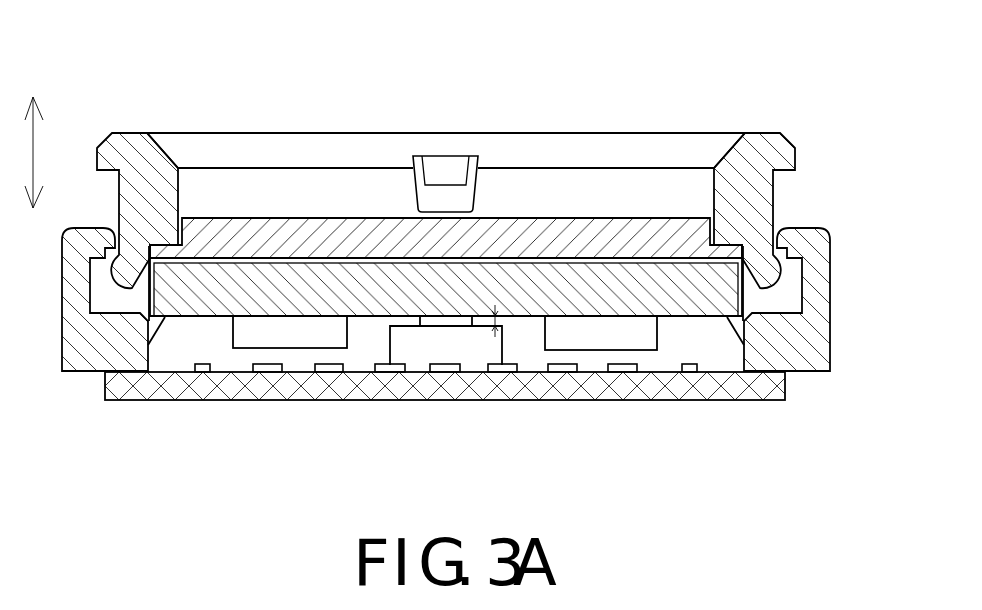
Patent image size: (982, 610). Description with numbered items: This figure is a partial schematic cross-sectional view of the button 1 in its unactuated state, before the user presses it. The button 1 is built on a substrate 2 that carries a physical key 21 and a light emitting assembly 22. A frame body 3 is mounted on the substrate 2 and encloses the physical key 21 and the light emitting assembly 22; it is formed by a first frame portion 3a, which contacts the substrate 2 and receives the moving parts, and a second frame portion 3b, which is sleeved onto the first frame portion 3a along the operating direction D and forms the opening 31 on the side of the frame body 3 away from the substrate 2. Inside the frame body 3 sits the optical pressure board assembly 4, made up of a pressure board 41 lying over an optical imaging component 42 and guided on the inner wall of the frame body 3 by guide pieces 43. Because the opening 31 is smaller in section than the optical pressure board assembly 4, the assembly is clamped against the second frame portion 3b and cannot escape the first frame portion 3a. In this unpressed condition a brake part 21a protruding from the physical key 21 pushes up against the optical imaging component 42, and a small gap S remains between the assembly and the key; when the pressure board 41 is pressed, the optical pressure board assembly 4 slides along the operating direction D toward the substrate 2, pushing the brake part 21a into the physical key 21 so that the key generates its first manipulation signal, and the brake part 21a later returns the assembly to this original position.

The button 1 is at (72, 33).
The substrate 2 is at (710, 392).
The physical key 21 is at (418, 358).
The brake part 21a is at (455, 320).
The light emitting assembly 22 is at (330, 368).
The frame body 3 is at (875, 148).
The first frame portion 3a is at (818, 243).
The second frame portion 3b is at (778, 153).
The opening 31 is at (481, 114).
The optical pressure board assembly 4 is at (312, 97).
The pressure board 41 is at (249, 238).
The optical imaging component 42 is at (296, 290).
The guide pieces 43 is at (294, 337).
The gap S is at (498, 325).
The operating direction D is at (23, 152).